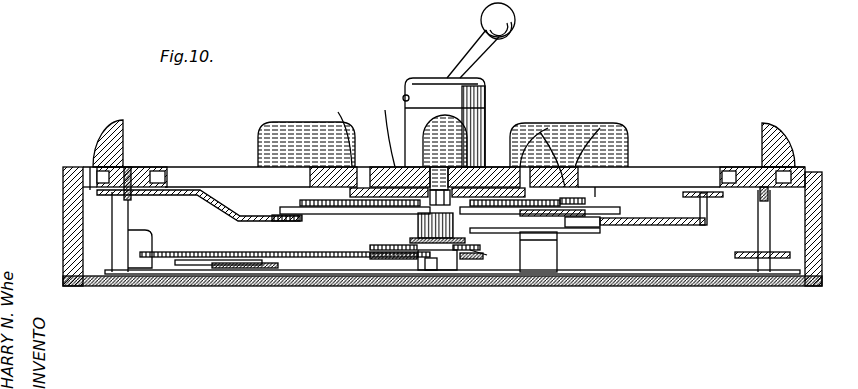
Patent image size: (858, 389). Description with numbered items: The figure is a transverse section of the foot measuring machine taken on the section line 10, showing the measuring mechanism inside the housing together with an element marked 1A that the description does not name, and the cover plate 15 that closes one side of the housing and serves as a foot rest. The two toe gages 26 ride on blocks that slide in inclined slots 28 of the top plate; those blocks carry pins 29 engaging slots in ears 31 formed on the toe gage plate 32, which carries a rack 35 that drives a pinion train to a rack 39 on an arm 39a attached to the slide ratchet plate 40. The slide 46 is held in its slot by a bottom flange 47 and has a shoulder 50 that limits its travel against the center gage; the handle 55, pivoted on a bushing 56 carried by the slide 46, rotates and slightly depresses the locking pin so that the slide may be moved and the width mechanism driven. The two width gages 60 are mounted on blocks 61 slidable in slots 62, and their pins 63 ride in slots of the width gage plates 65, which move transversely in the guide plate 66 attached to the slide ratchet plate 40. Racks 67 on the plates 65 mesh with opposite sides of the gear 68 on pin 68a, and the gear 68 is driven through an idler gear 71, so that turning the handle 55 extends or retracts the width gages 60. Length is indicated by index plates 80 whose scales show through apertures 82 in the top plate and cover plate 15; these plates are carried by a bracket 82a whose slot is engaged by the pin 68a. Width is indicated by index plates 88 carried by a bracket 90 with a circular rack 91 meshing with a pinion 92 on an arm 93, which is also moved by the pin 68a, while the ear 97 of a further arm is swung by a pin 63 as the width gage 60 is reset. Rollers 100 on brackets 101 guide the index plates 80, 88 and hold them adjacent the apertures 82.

The casing 1A is at (63, 206).
The section line 10 is at (467, 5).
The cover plate 15 is at (125, 278).
The toe gages 26 is at (278, 130).
The inclined slots 28 is at (350, 128).
The pins 29 is at (302, 205).
The ears 31 is at (598, 197).
The toe gage plate 32 is at (518, 233).
The rack 35 is at (597, 187).
The rack 39 is at (577, 185).
The arm 39a is at (545, 130).
The slide ratchet plate 40 is at (445, 160).
The slide 46 is at (466, 130).
The bottom flange 47 is at (393, 150).
The shoulder 50 is at (498, 138).
The handle 55 is at (487, 55).
The bushing 56 is at (404, 100).
The width gages 60 is at (130, 107).
The blocks 61 is at (147, 165).
The slots 62 is at (243, 160).
The pins 63 is at (129, 167).
The width gage plates 65 is at (255, 223).
The guide plate 66 is at (578, 213).
The racks 67 is at (313, 228).
The gear 68 is at (480, 243).
The pin 68a is at (450, 253).
The idler gear 71 is at (489, 256).
The index plates 80 is at (60, 8).
The apertures 82 is at (105, 7).
The bracket 82a is at (530, 242).
The index plates 88 is at (185, 272).
The bracket 90 is at (248, 270).
The circular rack 91 is at (317, 252).
The pinion 92 is at (380, 247).
The arm 93 is at (343, 250).
The ear 97 is at (738, 253).
The rollers 100 is at (447, 267).
The brackets 101 is at (427, 263).